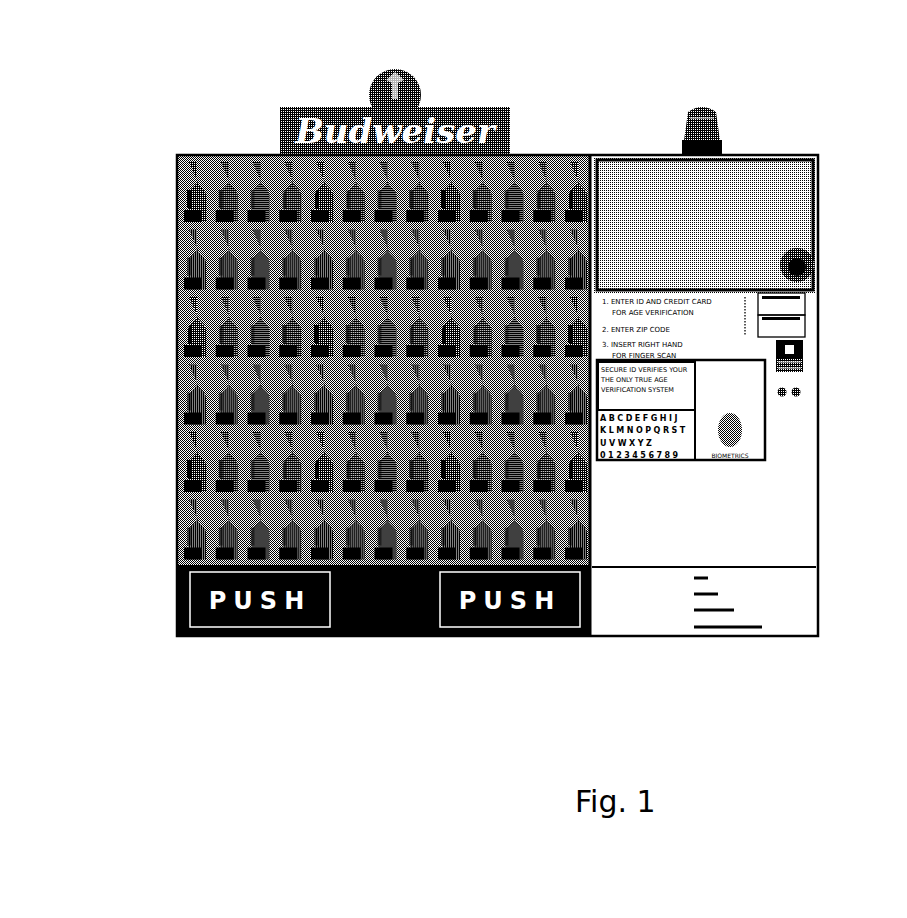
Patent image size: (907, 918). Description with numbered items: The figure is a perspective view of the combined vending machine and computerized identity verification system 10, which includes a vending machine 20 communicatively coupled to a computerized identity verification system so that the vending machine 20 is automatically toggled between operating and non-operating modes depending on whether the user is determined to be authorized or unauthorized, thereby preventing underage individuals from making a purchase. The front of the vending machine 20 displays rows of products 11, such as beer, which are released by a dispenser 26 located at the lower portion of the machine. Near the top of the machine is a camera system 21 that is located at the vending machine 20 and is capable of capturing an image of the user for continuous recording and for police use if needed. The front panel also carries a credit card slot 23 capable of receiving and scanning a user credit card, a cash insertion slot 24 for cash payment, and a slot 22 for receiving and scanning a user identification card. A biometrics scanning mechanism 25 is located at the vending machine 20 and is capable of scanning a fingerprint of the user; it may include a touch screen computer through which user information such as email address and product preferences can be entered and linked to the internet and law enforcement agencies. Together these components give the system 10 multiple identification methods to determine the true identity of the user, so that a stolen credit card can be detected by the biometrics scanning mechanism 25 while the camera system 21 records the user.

The combined vending machine and computerized identity verification system 10 is at (692, 86).
The products 11 is at (180, 395).
The vending machine 20 is at (770, 154).
The camera system 21 is at (812, 262).
The identification card slot 22 is at (806, 297).
The credit card slot 23 is at (806, 319).
The cash insertion slot 24 is at (838, 345).
The biometrics scanning mechanism 25 is at (806, 360).
The dispenser 26 is at (785, 591).